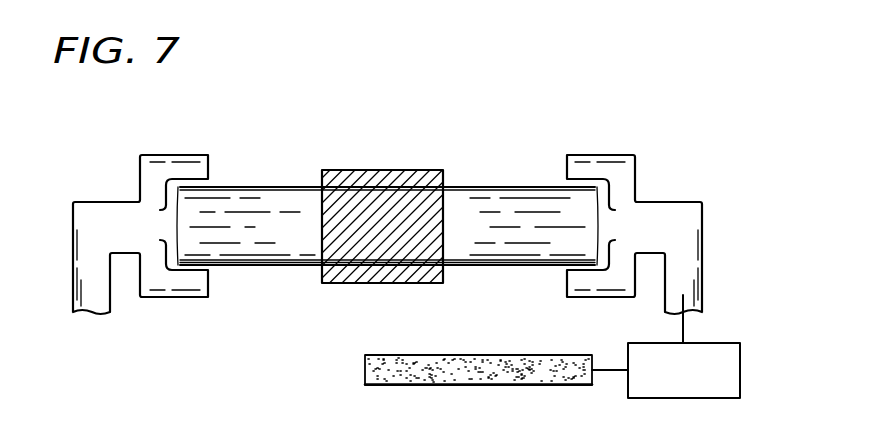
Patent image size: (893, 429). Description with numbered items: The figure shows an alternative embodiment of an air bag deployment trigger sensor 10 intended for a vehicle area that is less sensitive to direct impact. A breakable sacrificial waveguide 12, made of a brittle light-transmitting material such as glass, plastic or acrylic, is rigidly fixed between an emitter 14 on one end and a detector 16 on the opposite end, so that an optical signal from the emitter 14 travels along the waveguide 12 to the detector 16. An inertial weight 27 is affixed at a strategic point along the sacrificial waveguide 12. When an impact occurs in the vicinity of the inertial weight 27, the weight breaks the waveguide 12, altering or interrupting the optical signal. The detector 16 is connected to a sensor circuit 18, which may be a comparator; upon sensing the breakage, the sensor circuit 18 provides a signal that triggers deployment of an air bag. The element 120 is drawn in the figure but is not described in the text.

The air bag deployment trigger sensor 10 is at (343, 115).
The sacrificial waveguide 12 is at (242, 187).
The emitter 14 is at (155, 172).
The detector 16 is at (618, 167).
The sensor circuit 18 is at (740, 368).
The inertial weight 27 is at (403, 170).
The sensor strip 120 is at (365, 368).